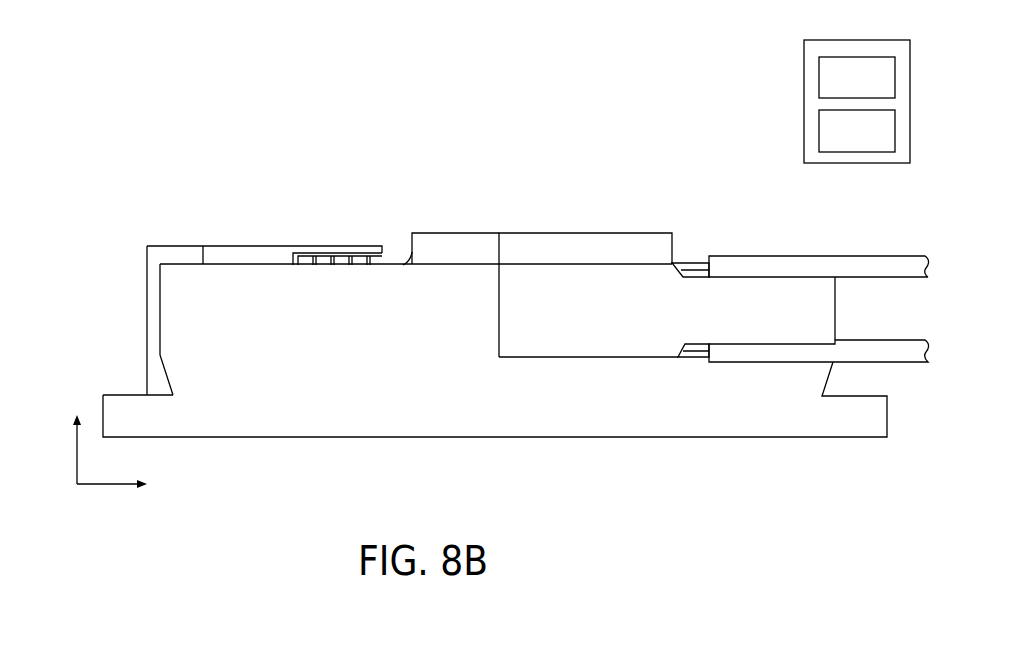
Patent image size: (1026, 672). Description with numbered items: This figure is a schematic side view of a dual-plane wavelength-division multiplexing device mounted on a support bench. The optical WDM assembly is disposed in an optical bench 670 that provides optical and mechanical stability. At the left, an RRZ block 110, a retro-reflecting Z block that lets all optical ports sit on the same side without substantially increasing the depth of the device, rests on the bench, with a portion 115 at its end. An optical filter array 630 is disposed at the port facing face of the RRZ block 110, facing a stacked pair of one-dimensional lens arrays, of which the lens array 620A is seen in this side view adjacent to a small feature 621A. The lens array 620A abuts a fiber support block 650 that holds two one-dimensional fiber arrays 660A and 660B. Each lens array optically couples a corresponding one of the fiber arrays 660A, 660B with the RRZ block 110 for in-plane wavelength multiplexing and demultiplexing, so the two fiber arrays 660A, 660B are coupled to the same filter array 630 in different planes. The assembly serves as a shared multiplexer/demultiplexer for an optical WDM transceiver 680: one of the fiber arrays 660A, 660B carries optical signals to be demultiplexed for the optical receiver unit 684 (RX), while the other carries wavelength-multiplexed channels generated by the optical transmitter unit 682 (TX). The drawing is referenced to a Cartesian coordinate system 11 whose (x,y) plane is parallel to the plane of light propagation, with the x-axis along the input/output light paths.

The Cartesian coordinate system 11 is at (50, 472).
The RRZ block 110 is at (247, 198).
The cap 115 is at (187, 246).
The optical filter array 630 is at (349, 227).
The fillet 621A is at (404, 234).
The 1D lens array 620A is at (447, 233).
The fiber support block 650 is at (602, 320).
The 1D fiber array 660A is at (690, 263).
The 1D fiber array 660B is at (700, 357).
The optical bench 670 is at (386, 362).
The optical WDM transceiver 680 is at (838, 40).
The optical transmitter unit 682 is at (819, 79).
The optical receiver unit 684 is at (819, 131).